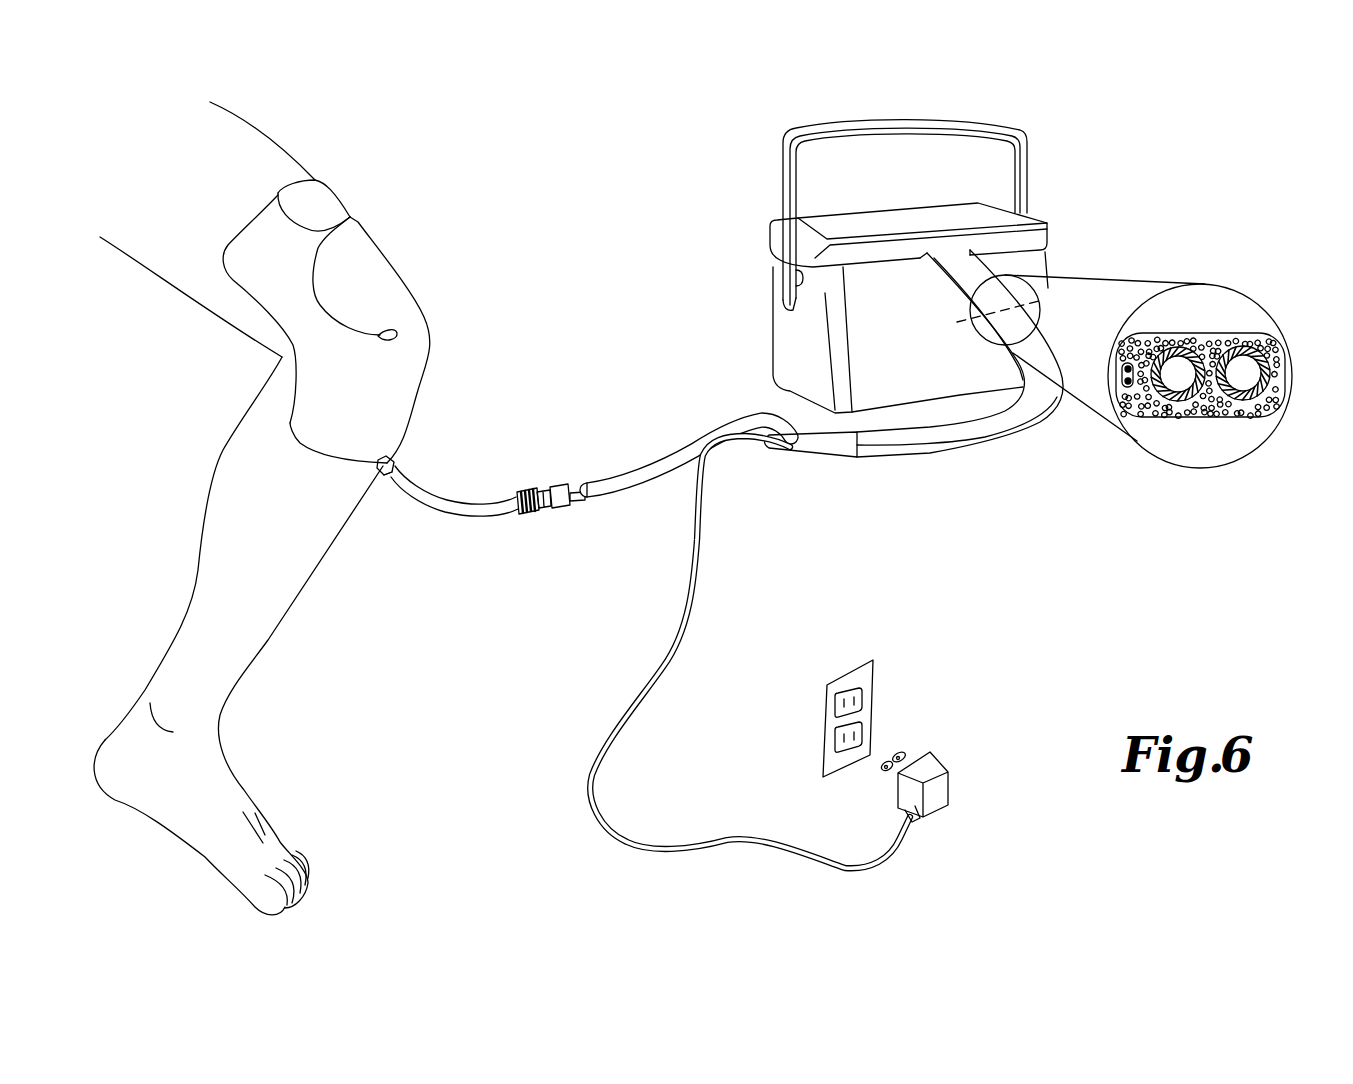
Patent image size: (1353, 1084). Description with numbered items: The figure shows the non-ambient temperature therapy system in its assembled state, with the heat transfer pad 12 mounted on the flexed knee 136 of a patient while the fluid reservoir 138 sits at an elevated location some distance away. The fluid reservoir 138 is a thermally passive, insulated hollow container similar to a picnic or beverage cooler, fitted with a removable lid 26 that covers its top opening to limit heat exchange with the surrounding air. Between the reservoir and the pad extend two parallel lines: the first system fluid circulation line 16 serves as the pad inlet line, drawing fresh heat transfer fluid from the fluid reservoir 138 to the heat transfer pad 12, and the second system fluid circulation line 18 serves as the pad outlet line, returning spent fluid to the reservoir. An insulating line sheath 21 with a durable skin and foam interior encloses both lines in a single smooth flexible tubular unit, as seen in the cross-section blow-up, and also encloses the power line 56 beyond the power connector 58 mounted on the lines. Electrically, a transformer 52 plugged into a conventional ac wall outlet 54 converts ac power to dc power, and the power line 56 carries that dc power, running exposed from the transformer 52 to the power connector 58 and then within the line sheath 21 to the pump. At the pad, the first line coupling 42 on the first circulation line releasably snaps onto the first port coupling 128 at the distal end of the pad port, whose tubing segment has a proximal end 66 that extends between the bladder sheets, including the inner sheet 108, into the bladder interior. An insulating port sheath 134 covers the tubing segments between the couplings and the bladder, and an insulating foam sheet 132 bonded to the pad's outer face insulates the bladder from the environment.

The heat transfer pad 12 is at (387, 257).
The flexed knee 136 is at (277, 362).
The insulating foam sheet 132 is at (320, 418).
The inner sheet 108 is at (379, 461).
The proximal end 66 is at (383, 479).
The first line coupling 42 is at (562, 498).
The port sheath 134 is at (463, 497).
The first port coupling 128 is at (548, 493).
The first system fluid circulation line 16 is at (575, 495).
The second system fluid circulation line 18 is at (1160, 380).
The insulating line sheath 21 is at (623, 487).
The removable lid 26 is at (848, 225).
The fluid reservoir 138 is at (1050, 272).
The power connector 58 is at (823, 443).
The power line 56 is at (1130, 388).
The ac wall outlet 54 is at (868, 674).
The transformer 52 is at (933, 765).